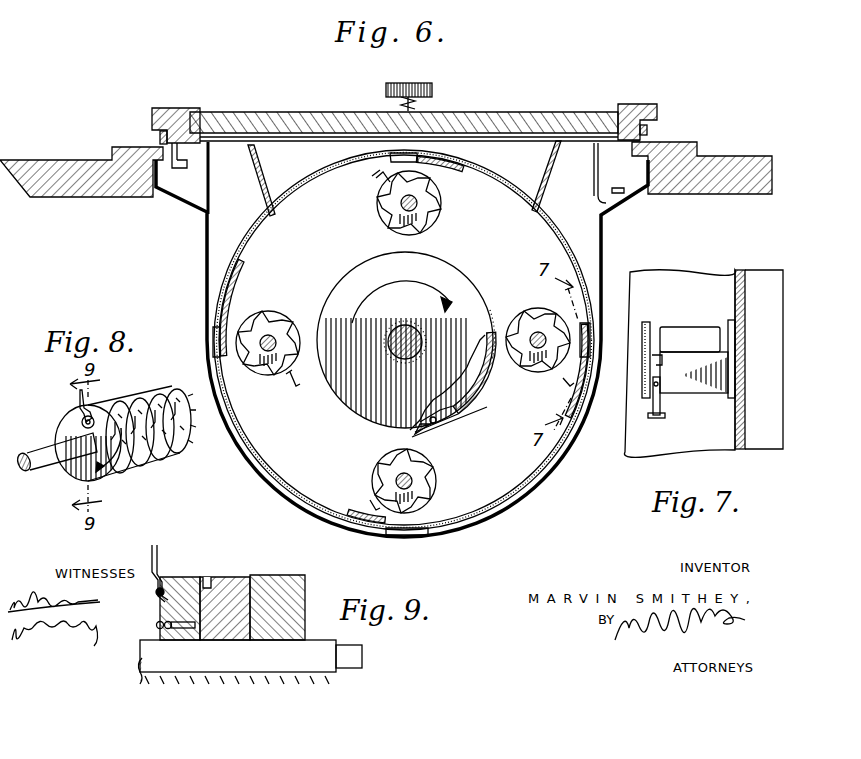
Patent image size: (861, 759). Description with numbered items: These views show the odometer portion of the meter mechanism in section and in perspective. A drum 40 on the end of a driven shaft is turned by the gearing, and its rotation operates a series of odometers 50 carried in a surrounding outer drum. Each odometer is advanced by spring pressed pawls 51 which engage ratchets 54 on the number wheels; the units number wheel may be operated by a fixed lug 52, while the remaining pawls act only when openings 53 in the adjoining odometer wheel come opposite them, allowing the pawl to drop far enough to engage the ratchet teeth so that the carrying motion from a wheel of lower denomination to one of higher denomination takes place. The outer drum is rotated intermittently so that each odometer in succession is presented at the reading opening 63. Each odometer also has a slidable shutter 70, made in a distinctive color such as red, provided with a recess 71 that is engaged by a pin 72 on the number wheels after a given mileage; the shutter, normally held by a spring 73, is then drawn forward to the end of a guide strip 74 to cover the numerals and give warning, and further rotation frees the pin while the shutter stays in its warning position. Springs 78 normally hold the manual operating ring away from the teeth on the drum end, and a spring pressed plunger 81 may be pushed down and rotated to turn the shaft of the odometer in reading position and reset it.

In FIG. 6, the drum 40 is at (478, 300).
In FIG. 6, the odometers 50 is at (390, 228).
In FIG. 8, the odometers 50 is at (112, 402).
In FIG. 9, the odometers 50 is at (182, 577).
In FIG. 6, the spring pressed pawl 51 is at (444, 424).
In FIG. 6, the fixed lug 52 is at (412, 436).
In FIG. 9, the openings 53 is at (208, 577).
In FIG. 6, the ratchets 54 is at (380, 208).
In FIG. 7, the reading opening 63 is at (706, 334).
In FIG. 7, the slidable shutter 70 is at (700, 393).
In FIG. 6, the recess 71 is at (432, 170).
In FIG. 7, the recess 71 is at (660, 362).
In FIG. 6, the pin 72 is at (368, 182).
In FIG. 8, the pin 72 is at (80, 403).
In FIG. 9, the pin 72 is at (153, 548).
In FIG. 6, the spring 73 is at (463, 186).
In FIG. 7, the spring 73 is at (652, 408).
In FIG. 6, the guide strip 74 is at (372, 155).
In FIG. 7, the guide strip 74 is at (650, 330).
In FIG. 6, the springs 78 is at (160, 138).
In FIG. 6, the spring pressed plunger 81 is at (398, 100).